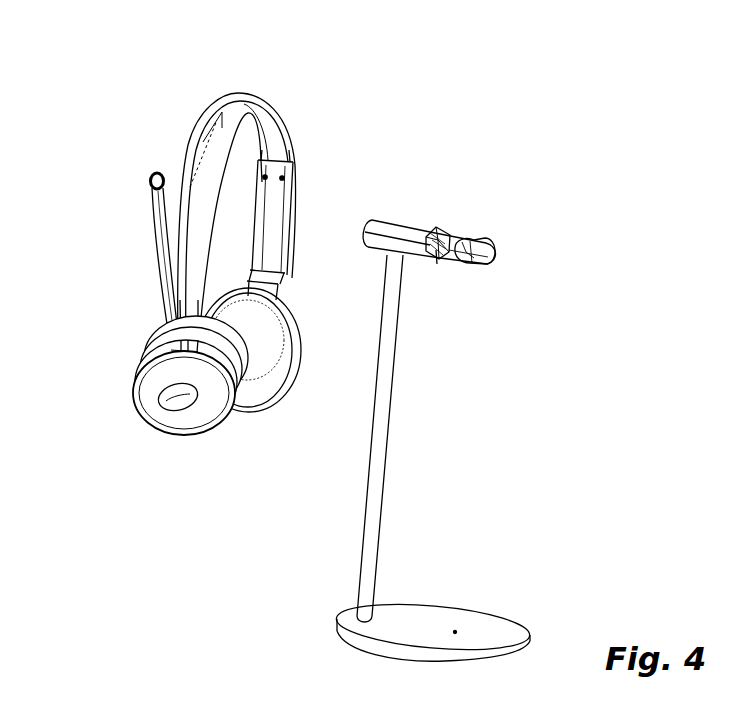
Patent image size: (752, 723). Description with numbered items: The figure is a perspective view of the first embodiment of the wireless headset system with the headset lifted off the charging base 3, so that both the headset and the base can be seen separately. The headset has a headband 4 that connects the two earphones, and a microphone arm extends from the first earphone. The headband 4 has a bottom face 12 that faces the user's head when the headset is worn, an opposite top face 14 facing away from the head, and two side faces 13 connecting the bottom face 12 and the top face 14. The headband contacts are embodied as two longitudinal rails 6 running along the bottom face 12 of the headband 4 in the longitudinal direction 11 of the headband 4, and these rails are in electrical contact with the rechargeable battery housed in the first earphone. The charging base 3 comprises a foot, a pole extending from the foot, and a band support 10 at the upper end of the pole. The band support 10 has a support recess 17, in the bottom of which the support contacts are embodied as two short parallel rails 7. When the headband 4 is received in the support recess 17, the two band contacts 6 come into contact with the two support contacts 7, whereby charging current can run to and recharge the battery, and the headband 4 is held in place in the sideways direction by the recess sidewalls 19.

The charging base 3 is at (430, 622).
The headband 4 is at (215, 102).
The headband contacts 6 is at (297, 140).
The support contacts 7 is at (448, 237).
The band support 10 is at (393, 220).
The longitudinal direction 11 is at (202, 140).
The bottom face 12 is at (268, 243).
The side faces 13 is at (295, 213).
The top face 14 is at (175, 160).
The support recess 17 is at (437, 264).
The recess sidewalls 19 is at (436, 226).